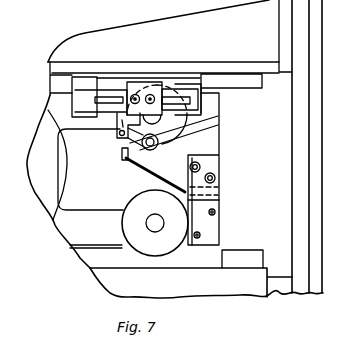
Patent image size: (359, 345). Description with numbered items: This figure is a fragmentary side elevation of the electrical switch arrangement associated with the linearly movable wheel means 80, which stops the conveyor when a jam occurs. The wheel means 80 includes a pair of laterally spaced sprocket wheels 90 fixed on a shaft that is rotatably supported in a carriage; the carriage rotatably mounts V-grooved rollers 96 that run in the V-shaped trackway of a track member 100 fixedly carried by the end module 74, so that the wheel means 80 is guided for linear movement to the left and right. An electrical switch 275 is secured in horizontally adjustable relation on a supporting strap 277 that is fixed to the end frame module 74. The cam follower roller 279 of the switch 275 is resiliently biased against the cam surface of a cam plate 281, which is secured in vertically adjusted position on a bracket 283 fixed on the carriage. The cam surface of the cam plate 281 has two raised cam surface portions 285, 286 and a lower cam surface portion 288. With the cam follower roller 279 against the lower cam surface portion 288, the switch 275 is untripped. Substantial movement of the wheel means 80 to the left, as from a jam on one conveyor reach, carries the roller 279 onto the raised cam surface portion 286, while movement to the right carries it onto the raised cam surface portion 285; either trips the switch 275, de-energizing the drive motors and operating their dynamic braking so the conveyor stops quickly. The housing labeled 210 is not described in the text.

The housing 210 is at (58, 0).
The end module 74 is at (322, 140).
The supporting strap 277 is at (106, 90).
The electrical switch 275 is at (143, 90).
The cam follower roller 279 is at (218, 116).
The raised cam surface portion 286 is at (218, 125).
The lower cam surface portion 288 is at (153, 150).
The raised cam surface portion 285 is at (122, 160).
The cam plate 281 is at (141, 173).
The bracket 283 is at (219, 192).
The wheel means 80 is at (62, 118).
The sprocket wheel 90 is at (45, 187).
The V-grooved roller 96 is at (127, 231).
The track member 100 is at (227, 273).